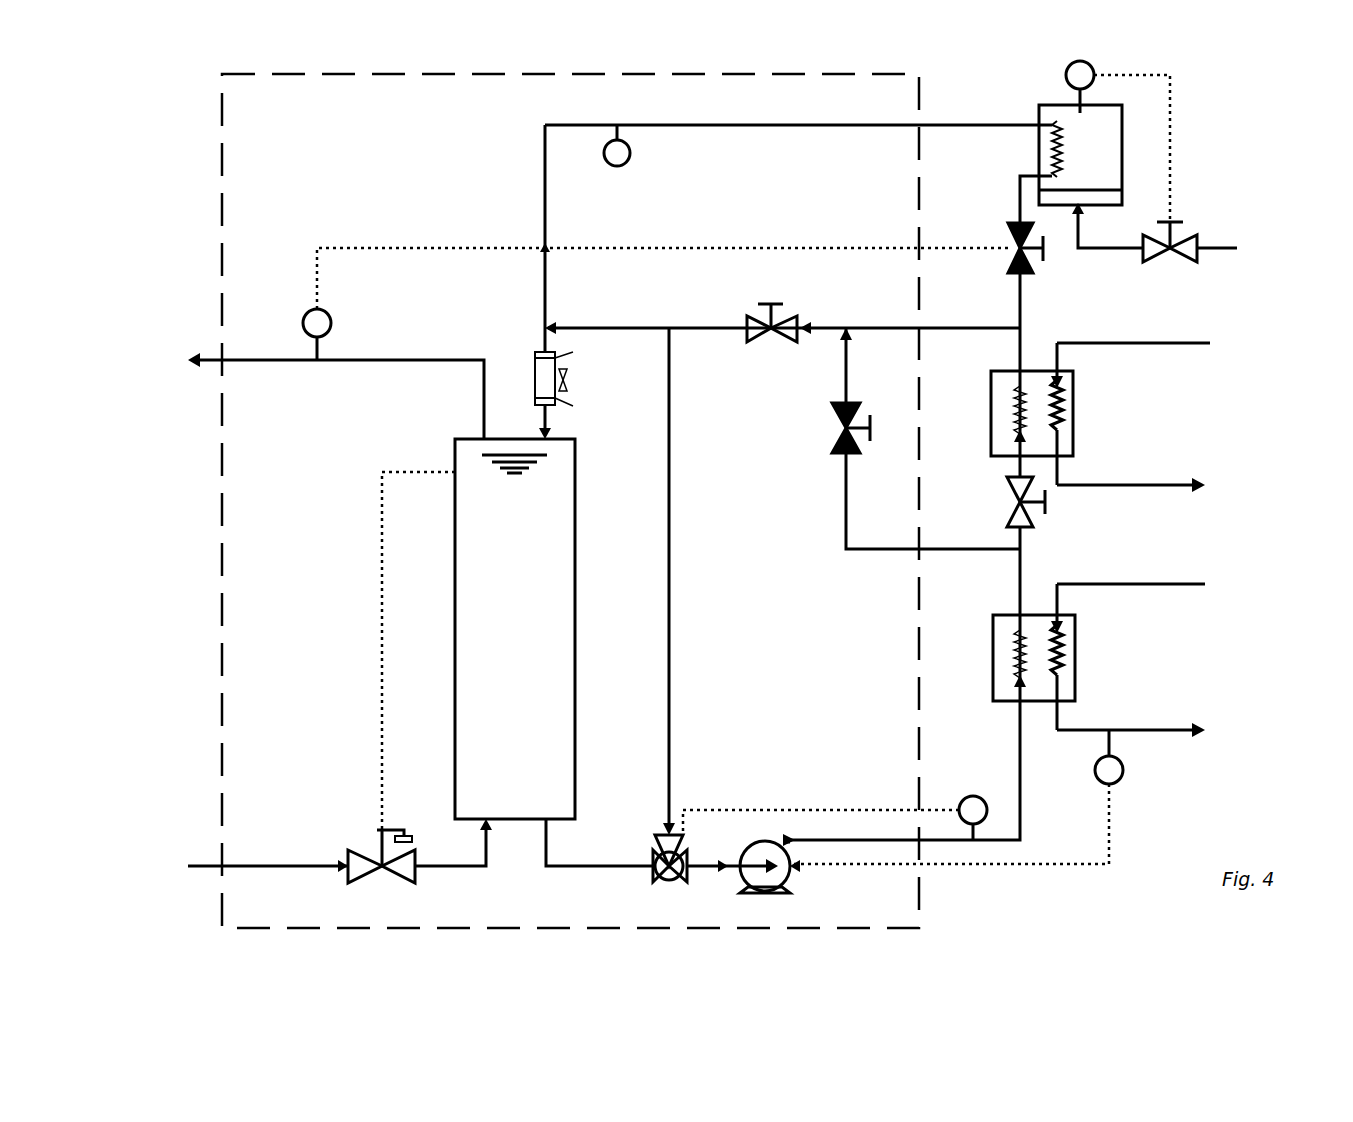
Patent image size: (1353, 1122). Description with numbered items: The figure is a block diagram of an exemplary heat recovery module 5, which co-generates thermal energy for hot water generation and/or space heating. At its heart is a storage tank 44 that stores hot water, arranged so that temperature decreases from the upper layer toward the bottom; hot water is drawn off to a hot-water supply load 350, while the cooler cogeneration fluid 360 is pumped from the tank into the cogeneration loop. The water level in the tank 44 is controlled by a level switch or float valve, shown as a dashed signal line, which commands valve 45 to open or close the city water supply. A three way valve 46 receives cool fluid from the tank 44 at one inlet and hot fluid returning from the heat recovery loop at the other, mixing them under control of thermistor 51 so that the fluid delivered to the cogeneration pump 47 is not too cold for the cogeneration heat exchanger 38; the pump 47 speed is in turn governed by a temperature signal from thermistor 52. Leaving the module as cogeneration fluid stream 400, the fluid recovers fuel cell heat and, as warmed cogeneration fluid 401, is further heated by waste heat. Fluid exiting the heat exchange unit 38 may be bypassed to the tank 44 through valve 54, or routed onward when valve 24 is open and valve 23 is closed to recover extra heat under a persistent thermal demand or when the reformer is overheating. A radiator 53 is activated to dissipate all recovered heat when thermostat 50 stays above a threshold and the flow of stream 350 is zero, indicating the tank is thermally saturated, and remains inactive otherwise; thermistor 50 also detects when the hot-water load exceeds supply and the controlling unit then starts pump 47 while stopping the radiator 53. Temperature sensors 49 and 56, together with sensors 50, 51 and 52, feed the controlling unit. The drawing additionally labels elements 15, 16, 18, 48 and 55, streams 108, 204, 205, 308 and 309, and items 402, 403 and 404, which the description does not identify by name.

The heat recovery module 5 is at (210, 195).
The vessel 15 is at (1095, 155).
The vessel bottom section 16 is at (1091, 219).
The heat exchanger 18 is at (1050, 414).
The valve 23 is at (772, 311).
The valve 24 is at (1002, 218).
The cogeneration heat exchanger 38 is at (1015, 657).
The storage tank 44 is at (517, 652).
The valve 45 is at (381, 867).
The three way valve 46 is at (670, 618).
The cogeneration pump 47 is at (770, 854).
The valve 48 is at (1170, 254).
The temperature sensor 49 is at (1118, 130).
The thermistor 50 is at (331, 334).
The thermistor 51 is at (835, 811).
The thermistor 52 is at (978, 797).
The radiator 53 is at (527, 395).
The valve 54 is at (835, 428).
The valve 55 is at (1011, 502).
The temperature sensor 56 is at (634, 145).
The steam line 108 is at (1247, 247).
The inlet line 204 is at (1162, 343).
The outlet line 205 is at (1161, 485).
The inlet line 308 is at (1162, 584).
The outlet line 309 is at (1154, 730).
The hot-water supply load 350 is at (315, 394).
The cooler cogeneration fluid 360 is at (242, 866).
The cogeneration fluid stream 400 is at (902, 770).
The warmed cogeneration fluid 401 is at (995, 571).
The pipe segment 402 is at (782, 338).
The pipe segment 403 is at (1046, 300).
The fan 404 is at (588, 379).